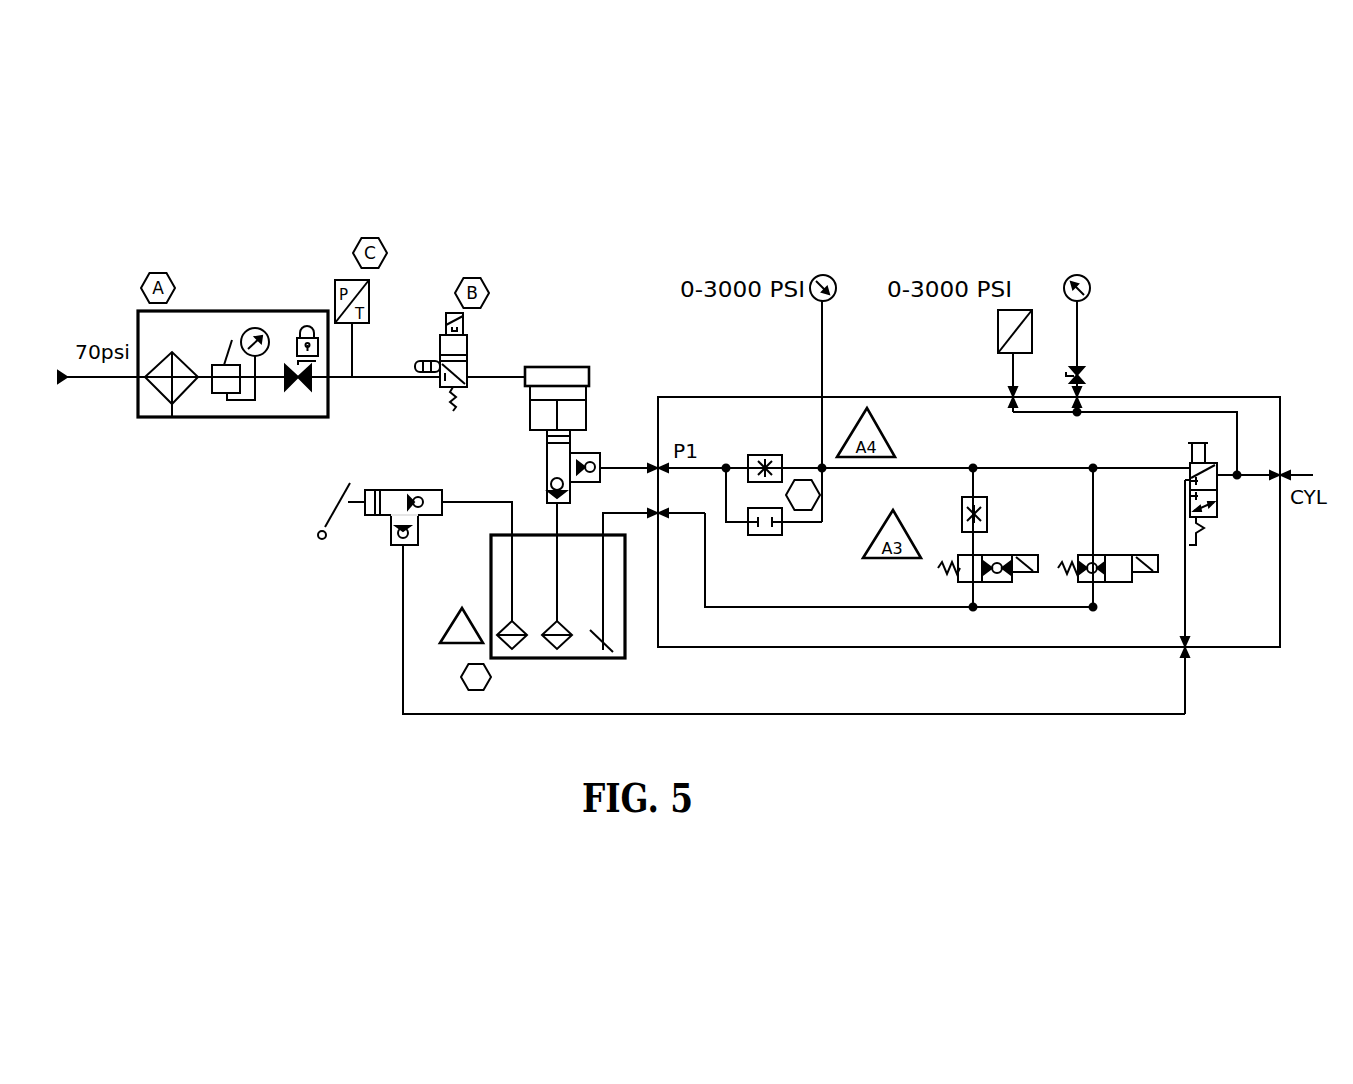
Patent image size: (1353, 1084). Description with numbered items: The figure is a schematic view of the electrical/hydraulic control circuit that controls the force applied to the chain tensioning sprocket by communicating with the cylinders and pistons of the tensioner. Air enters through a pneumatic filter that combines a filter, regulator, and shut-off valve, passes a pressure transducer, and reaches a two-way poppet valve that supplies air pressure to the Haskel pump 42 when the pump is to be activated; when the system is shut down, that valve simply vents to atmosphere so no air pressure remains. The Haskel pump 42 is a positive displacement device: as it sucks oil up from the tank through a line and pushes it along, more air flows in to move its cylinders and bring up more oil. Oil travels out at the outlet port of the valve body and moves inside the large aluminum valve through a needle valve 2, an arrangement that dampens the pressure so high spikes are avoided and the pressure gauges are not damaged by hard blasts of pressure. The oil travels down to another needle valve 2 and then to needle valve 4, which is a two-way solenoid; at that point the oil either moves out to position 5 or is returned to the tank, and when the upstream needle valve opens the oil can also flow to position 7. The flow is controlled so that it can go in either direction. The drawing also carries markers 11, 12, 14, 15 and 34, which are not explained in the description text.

The needle valve 2 is at (850, 519).
The needle valve 4 is at (1001, 558).
The position 5 is at (1116, 537).
The position 7 is at (1211, 496).
The pressure gauge 0-3000 PSI 11 is at (1052, 341).
The pressure transducer rating 0-3000 PSI 4-20 mA 12 is at (912, 333).
The pressure transducer 14 is at (1033, 361).
The gauge isolation valve 15 is at (1099, 359).
The manual pump 34 is at (420, 503).
The Haskel pump 42 is at (603, 377).